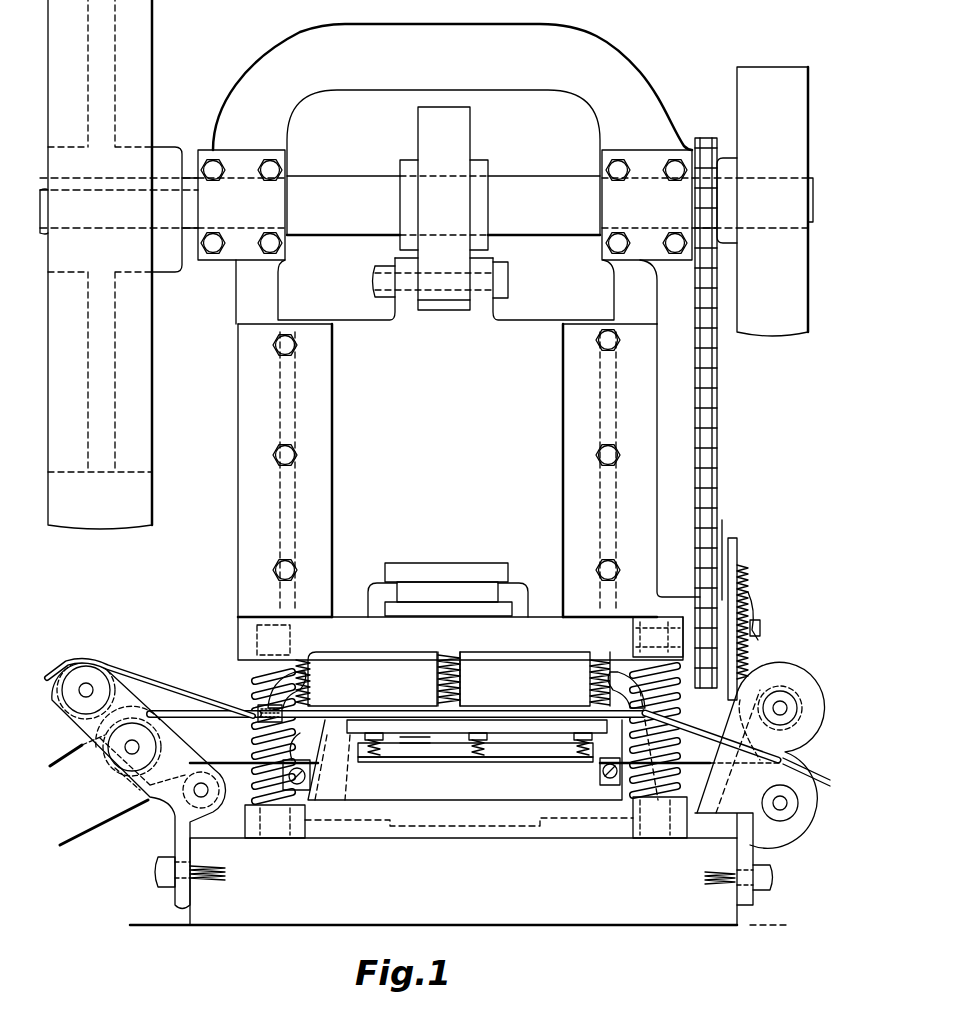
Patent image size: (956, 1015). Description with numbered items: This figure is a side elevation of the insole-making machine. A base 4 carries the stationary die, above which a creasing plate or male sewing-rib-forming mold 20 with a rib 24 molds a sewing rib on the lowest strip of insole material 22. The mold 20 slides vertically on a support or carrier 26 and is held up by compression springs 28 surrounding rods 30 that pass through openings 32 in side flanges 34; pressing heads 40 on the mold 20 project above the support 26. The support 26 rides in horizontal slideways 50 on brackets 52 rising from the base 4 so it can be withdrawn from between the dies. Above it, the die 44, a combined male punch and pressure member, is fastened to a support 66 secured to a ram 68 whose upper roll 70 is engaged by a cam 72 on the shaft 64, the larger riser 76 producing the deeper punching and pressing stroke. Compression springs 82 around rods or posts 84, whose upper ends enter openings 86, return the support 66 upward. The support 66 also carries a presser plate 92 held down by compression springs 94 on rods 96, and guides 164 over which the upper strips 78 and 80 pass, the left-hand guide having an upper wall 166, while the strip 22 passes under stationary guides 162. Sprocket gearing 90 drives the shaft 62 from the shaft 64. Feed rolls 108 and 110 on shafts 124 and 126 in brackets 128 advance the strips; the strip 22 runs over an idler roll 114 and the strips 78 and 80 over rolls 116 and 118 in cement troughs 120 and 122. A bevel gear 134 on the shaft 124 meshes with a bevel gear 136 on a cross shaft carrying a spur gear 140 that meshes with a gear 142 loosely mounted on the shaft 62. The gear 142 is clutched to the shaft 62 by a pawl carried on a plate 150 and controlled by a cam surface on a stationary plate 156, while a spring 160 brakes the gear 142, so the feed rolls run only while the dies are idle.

The base 4 is at (460, 861).
The creasing plate or male sewing-rib-forming mold 20 is at (427, 752).
The sheet or strip of insole material 22 is at (85, 840).
The rib 24 is at (457, 763).
The support or carrier 26 is at (445, 750).
The compression springs 28 is at (378, 757).
The rods 30 is at (478, 758).
The openings 32 is at (362, 712).
The side flanges 34 is at (416, 740).
The pressing heads 40 is at (390, 728).
The die 44 is at (372, 667).
The horizontal slideways 50 is at (338, 724).
The brackets 52 is at (510, 822).
The shaft 62 is at (757, 622).
The shaft 64 is at (513, 180).
The support 66 is at (530, 615).
The ram 68 is at (456, 320).
The roll 70 is at (455, 302).
The cam 72 is at (444, 205).
The riser 76 is at (462, 125).
The sheet or strip of insole material 78 is at (58, 672).
The sheet or strip of insole material 80 is at (58, 766).
The compression springs 82 is at (250, 672).
The rods or posts 84 is at (268, 676).
The openings 86 is at (242, 623).
The sprocket gearing 90 is at (717, 420).
The presser plate 92 is at (470, 715).
The compression springs 94 is at (313, 668).
The rods 96 is at (452, 656).
The feed roll 108 is at (772, 642).
The feed roll 110 is at (770, 856).
The idler roll 114 is at (178, 812).
The roll 116 is at (92, 672).
The roll 118 is at (165, 716).
The trough 120 is at (150, 682).
The trough 122 is at (120, 780).
The shaft 124 is at (745, 760).
The shaft 126 is at (775, 808).
The brackets 128 is at (735, 822).
The bevel gear 134 is at (777, 682).
The bevel gear 136 is at (775, 662).
The spur gear 140 is at (735, 705).
The gear 142 is at (745, 575).
The plate 150 is at (723, 535).
The stationary plate 156 is at (738, 545).
The spring 160 is at (750, 608).
The stationary guides 162 is at (255, 756).
The guides 164 is at (630, 660).
The upper wall 166 is at (262, 708).